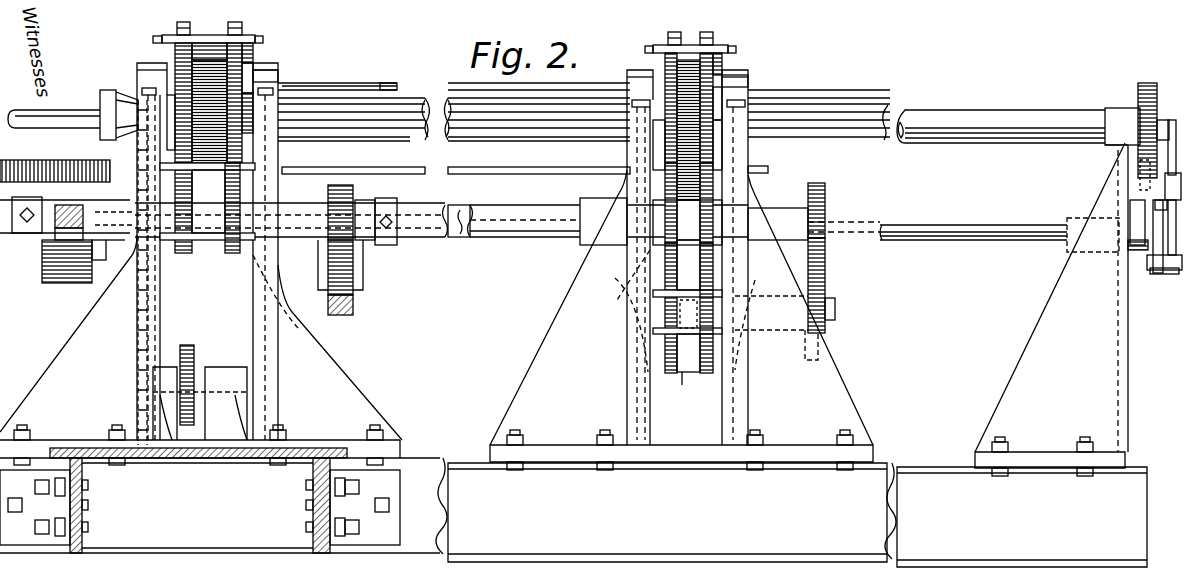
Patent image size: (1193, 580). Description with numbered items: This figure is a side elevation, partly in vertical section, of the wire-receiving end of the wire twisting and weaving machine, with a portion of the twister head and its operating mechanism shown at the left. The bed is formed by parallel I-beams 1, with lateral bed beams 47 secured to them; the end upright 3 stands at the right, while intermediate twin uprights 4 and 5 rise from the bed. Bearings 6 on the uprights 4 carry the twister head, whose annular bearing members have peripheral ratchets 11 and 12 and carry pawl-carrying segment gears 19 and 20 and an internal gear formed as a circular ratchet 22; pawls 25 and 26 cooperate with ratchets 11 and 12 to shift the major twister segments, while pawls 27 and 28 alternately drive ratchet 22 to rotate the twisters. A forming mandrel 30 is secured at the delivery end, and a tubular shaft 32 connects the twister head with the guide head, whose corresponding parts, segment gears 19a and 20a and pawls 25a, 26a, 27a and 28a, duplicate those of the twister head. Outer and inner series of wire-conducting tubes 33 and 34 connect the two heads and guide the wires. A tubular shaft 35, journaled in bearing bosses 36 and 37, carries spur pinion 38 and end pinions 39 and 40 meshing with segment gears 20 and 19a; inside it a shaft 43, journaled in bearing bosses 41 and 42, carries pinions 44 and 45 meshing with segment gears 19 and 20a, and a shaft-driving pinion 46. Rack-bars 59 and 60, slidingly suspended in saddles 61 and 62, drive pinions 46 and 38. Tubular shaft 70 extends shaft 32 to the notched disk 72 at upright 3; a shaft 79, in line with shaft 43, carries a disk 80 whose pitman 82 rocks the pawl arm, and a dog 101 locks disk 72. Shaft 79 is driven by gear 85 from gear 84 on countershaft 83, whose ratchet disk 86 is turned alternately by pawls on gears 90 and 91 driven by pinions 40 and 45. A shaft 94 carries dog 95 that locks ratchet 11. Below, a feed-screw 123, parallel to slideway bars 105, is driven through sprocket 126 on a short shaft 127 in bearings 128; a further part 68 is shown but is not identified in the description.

The bed beams 1 is at (573, 512).
The end standard 3 is at (1125, 330).
The twin uprights 4 is at (120, 307).
The twin uprights 5 is at (583, 277).
The bearings 6 is at (163, 70).
The ratchet 11 is at (167, 100).
The ratchet 12 is at (248, 118).
The segment gear 19 is at (180, 82).
The segment gear 19a is at (670, 90).
The segment gear 20 is at (262, 70).
The segment gear 20a is at (715, 92).
The circular ratchet 22 is at (207, 38).
The pawl 25 is at (182, 37).
The pawl 25a is at (668, 55).
The pawl 26 is at (250, 53).
The pawl 26a is at (718, 47).
The pawl 27 is at (200, 68).
The pawl 27a is at (690, 60).
The pawl 28 is at (233, 33).
The pawl 28a is at (695, 45).
The forming head 30 is at (147, 72).
The tubular shaft 32 is at (444, 100).
The wire-conducting tubes 33 is at (337, 83).
The wire-conducting tubes 34 is at (378, 85).
The tubular shaft 35 is at (510, 228).
The bearing boss 36 is at (308, 210).
The bearing boss 37 is at (602, 213).
The spur pinion 38 is at (355, 188).
The spur pinion 39 is at (232, 258).
The spur pinion 40 is at (670, 322).
The bearing boss 41 is at (110, 232).
The bearing boss 42 is at (790, 199).
The shaft 43 is at (452, 212).
The spur pinion 44 is at (178, 258).
The spur pinion 45 is at (717, 245).
The shaft-driving pinion 46 is at (85, 205).
The bed beams 47 is at (88, 495).
The rack-bar 59 is at (58, 228).
The rack-bar 60 is at (352, 312).
The saddle 61 is at (58, 282).
The saddle 62 is at (363, 288).
The collar 68 is at (278, 65).
The tubular shaft 70 is at (920, 112).
The disk 72 is at (1143, 98).
The shaft section 79 is at (938, 229).
The disk 80 is at (1157, 291).
The pitman 82 is at (1168, 187).
The countershaft 83 is at (835, 318).
The spur gear 84 is at (827, 291).
The spur gear 85 is at (823, 186).
The disk 86 is at (680, 372).
The gear 90 is at (662, 340).
The gear 91 is at (712, 347).
The shaft 94 is at (505, 235).
The dog 95 is at (157, 182).
The dog 101 is at (1147, 178).
The slideway bars 105 is at (62, 117).
The feed-screw 123 is at (55, 158).
The sprocket 126 is at (188, 340).
The short shaft 127 is at (198, 370).
The bearings 128 is at (165, 365).